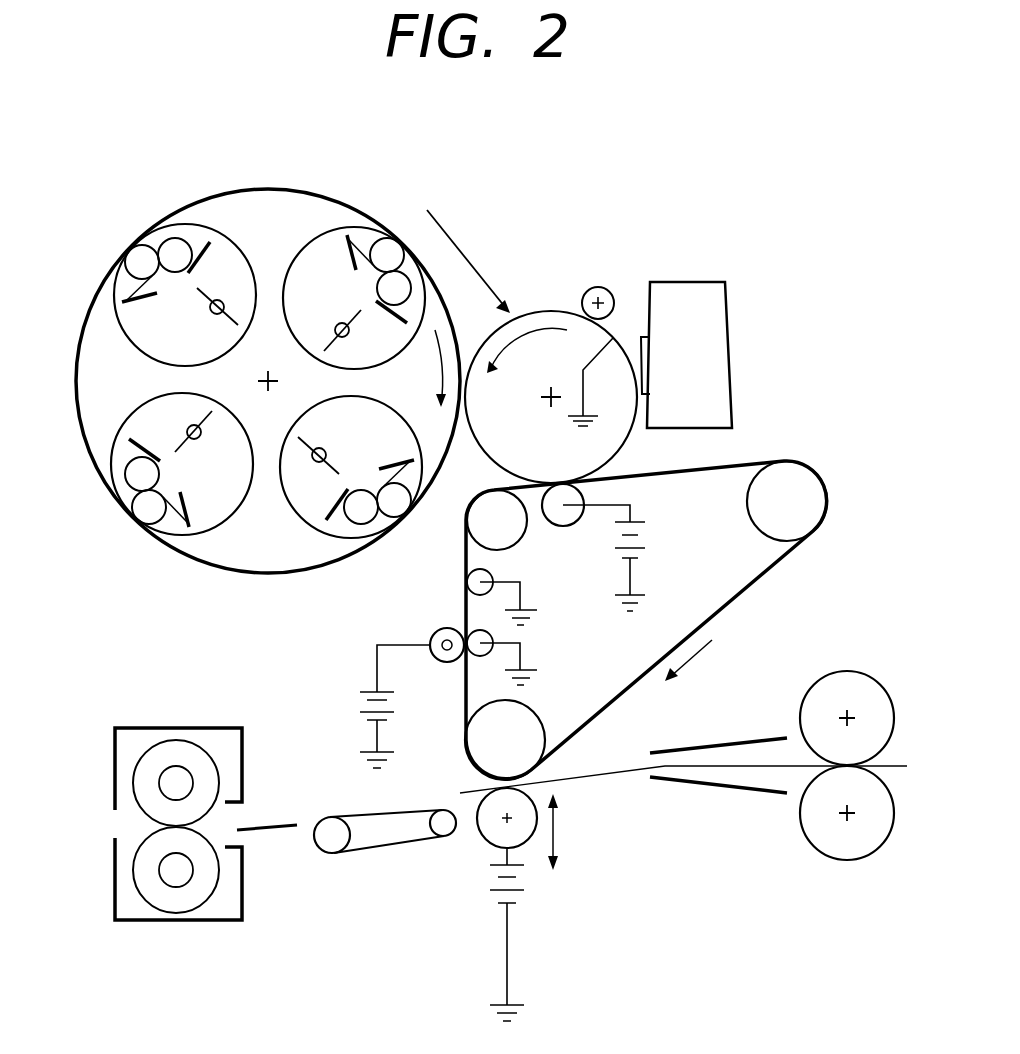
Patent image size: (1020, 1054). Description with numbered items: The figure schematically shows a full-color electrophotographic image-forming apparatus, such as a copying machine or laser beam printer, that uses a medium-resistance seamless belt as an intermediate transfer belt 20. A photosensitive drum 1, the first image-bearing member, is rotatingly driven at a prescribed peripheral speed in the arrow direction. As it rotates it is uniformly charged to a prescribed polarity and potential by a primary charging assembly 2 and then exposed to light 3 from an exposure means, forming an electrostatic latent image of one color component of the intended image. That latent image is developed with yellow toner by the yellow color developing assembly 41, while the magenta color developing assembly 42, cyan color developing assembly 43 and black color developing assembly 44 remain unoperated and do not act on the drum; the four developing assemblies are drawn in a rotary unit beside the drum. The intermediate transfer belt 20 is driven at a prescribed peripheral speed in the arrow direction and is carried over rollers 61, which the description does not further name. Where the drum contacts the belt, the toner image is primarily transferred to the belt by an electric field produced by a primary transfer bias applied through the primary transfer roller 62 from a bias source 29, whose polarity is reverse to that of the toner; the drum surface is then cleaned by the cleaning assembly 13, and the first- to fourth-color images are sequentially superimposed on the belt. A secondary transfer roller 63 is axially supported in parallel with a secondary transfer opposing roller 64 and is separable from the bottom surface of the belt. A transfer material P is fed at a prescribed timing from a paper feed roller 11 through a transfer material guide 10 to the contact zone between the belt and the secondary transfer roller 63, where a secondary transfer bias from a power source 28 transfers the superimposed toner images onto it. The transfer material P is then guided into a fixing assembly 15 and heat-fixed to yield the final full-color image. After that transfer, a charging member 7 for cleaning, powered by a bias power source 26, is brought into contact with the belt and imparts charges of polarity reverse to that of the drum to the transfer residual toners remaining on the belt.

The photosensitive drum 1 is at (540, 310).
The primary charging assembly 2 is at (606, 288).
The light 3 is at (447, 223).
The cleaning assembly 13 is at (720, 342).
The intermediate transfer belt 20 is at (777, 567).
The support rollers 61 is at (480, 533).
The primary transfer roller 62 is at (565, 518).
The secondary transfer opposing roller 64 is at (545, 732).
The charging member for cleaning 7 is at (447, 663).
The bias power source 26 is at (360, 707).
The bias source 29 is at (655, 540).
The power source 28 is at (527, 883).
The secondary transfer roller 63 is at (482, 837).
The paper feed roller 11 is at (845, 672).
The transfer material guide 10 is at (740, 793).
The fixing assembly 15 is at (115, 762).
The yellow color developing assembly 41 is at (352, 228).
The magenta color developing assembly 42 is at (190, 228).
The cyan color developing assembly 43 is at (168, 537).
The black color developing assembly 44 is at (307, 518).
The transfer material P is at (610, 775).